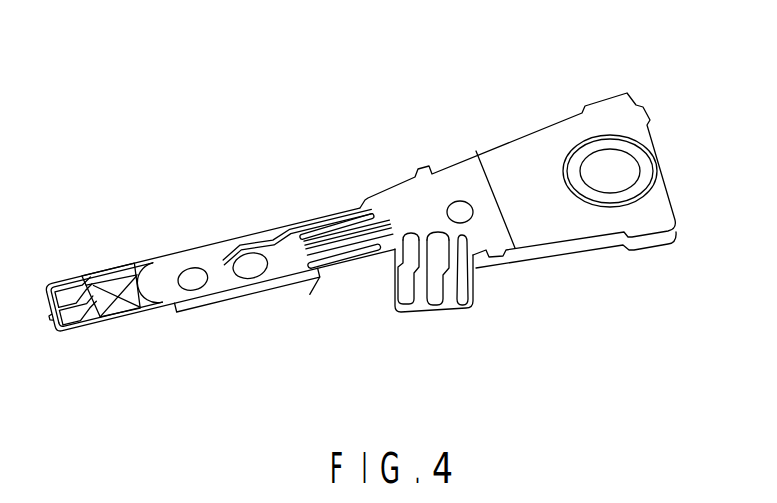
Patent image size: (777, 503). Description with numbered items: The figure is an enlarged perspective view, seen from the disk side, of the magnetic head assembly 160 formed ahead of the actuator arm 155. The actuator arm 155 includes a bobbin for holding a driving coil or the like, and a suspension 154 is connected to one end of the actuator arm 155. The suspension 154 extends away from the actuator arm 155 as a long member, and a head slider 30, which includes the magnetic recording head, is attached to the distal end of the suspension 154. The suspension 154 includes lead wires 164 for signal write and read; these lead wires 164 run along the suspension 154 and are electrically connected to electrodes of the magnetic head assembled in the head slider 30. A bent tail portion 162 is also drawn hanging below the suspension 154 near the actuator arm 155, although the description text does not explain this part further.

The magnetic head assembly 160 is at (197, 109).
The suspension 154 is at (283, 226).
The actuator arm 155 is at (583, 223).
The bent tail portion 162 is at (447, 302).
The lead wires 164 is at (222, 292).
The head slider 30 is at (107, 273).